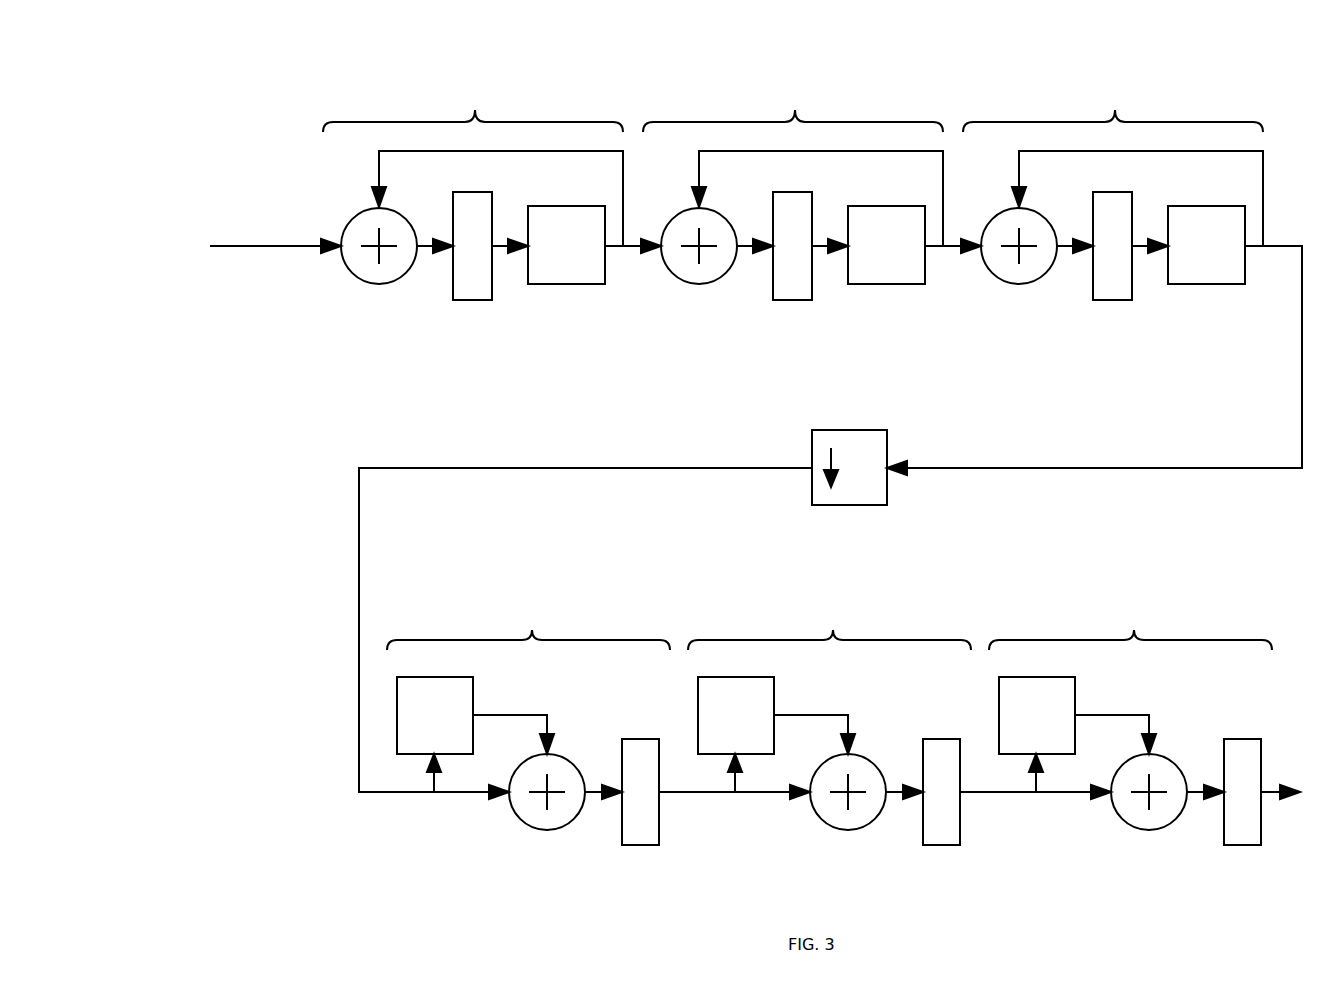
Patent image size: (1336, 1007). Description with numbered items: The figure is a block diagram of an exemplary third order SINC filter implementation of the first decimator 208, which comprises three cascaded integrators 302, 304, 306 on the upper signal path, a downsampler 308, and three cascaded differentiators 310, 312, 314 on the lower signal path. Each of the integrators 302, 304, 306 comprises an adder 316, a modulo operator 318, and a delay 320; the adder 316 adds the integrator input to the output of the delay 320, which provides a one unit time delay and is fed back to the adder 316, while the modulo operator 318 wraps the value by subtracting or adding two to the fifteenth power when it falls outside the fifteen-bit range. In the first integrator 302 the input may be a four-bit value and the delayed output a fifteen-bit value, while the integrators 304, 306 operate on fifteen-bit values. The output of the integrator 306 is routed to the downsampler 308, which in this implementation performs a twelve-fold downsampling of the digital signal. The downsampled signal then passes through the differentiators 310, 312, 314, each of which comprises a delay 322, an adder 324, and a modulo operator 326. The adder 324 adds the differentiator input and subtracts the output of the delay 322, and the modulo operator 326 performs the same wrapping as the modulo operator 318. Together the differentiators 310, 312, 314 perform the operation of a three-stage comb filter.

The first decimator 208 is at (236, 87).
The integrator 302 is at (475, 110).
The integrator 304 is at (795, 110).
The integrator 306 is at (1115, 110).
The downsampler 308 is at (887, 450).
The differentiator 310 is at (532, 630).
The differentiator 312 is at (833, 630).
The differentiator 314 is at (1134, 630).
The adder 316 is at (372, 285).
The modulo operator 318 is at (462, 299).
The delay 320 is at (558, 284).
The delay 322 is at (473, 705).
The adder 324 is at (540, 830).
The modulo operator 326 is at (630, 845).